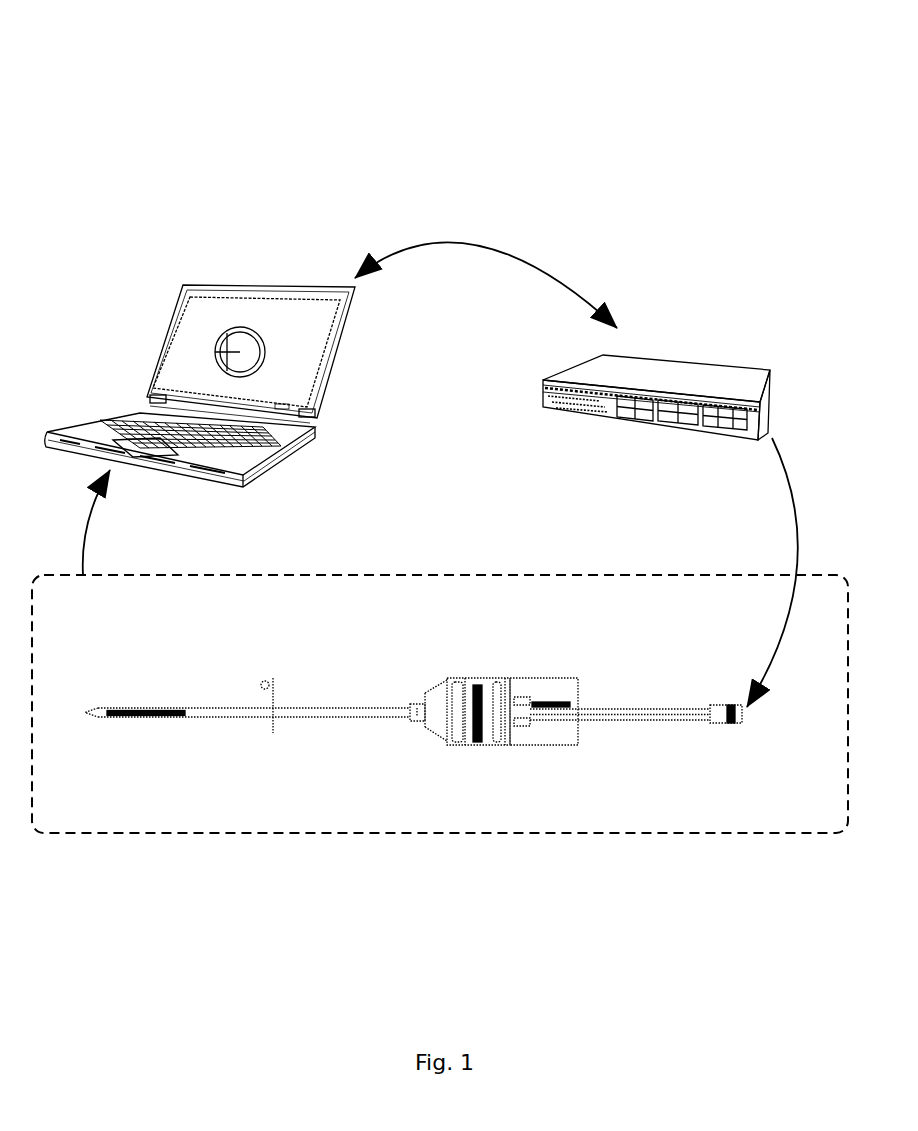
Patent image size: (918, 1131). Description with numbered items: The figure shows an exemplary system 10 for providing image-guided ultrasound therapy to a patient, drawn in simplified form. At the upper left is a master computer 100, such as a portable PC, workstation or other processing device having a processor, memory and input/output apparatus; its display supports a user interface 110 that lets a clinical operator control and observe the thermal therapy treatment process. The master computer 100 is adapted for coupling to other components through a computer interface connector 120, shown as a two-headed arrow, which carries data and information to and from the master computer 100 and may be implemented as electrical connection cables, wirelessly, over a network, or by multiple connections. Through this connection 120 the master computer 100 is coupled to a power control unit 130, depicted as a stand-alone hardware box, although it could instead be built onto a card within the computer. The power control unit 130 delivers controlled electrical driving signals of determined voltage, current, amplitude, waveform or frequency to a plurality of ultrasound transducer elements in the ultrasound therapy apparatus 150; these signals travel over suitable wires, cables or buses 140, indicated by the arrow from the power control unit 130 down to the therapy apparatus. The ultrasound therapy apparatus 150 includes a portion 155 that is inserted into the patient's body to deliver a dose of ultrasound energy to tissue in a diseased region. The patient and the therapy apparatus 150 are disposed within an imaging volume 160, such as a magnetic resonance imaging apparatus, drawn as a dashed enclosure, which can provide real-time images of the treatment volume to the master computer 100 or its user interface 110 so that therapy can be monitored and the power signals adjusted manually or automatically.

The system 10 is at (227, 80).
The master computer 100 is at (132, 368).
The user interface 110 is at (227, 327).
The computer interface connector 120 is at (480, 243).
The power control unit 130 is at (680, 365).
The wires, cables, or buses 140 is at (793, 553).
The ultrasound therapy apparatus 150 is at (477, 673).
The portion 155 is at (138, 720).
The imaging volume 160 is at (492, 575).